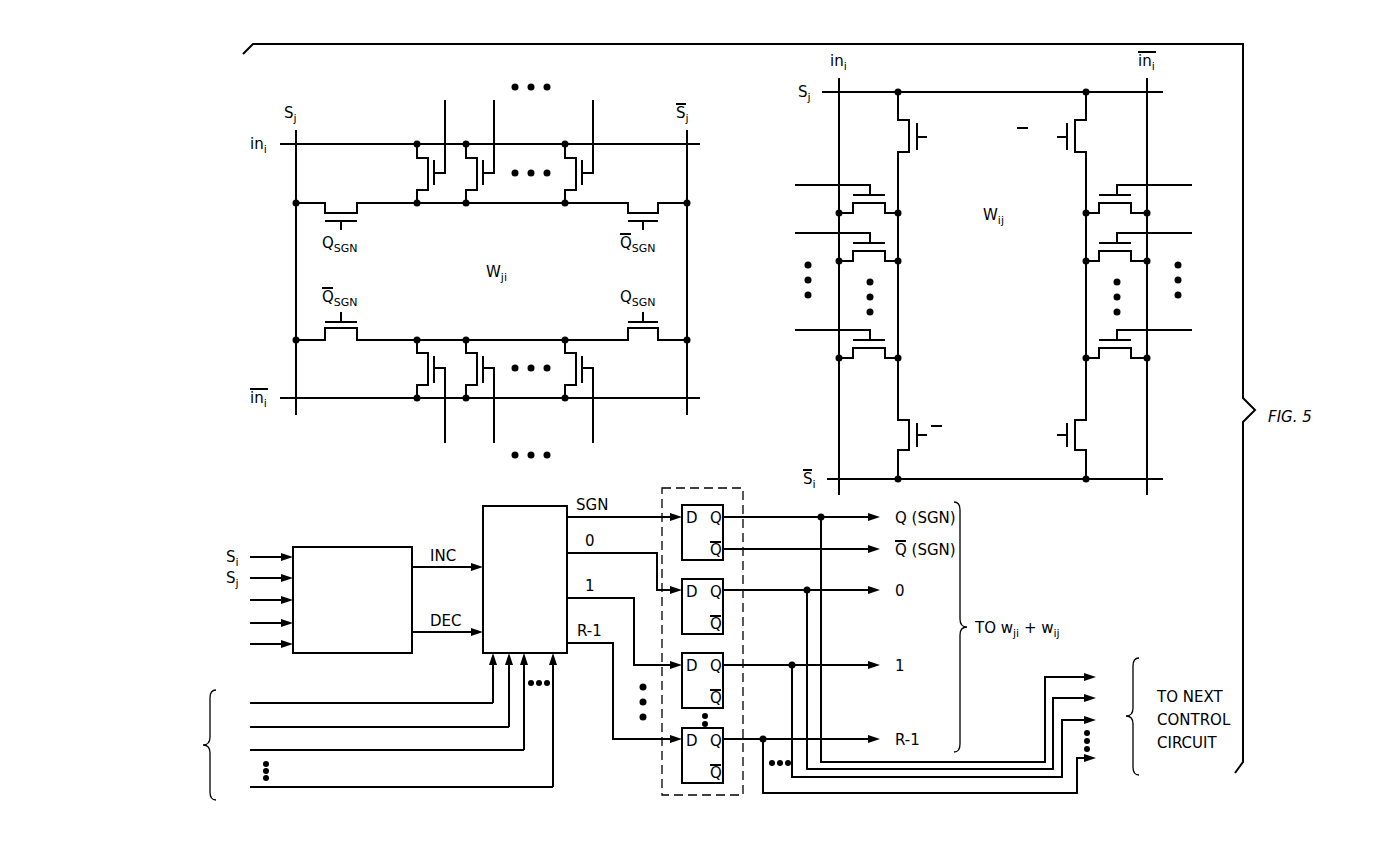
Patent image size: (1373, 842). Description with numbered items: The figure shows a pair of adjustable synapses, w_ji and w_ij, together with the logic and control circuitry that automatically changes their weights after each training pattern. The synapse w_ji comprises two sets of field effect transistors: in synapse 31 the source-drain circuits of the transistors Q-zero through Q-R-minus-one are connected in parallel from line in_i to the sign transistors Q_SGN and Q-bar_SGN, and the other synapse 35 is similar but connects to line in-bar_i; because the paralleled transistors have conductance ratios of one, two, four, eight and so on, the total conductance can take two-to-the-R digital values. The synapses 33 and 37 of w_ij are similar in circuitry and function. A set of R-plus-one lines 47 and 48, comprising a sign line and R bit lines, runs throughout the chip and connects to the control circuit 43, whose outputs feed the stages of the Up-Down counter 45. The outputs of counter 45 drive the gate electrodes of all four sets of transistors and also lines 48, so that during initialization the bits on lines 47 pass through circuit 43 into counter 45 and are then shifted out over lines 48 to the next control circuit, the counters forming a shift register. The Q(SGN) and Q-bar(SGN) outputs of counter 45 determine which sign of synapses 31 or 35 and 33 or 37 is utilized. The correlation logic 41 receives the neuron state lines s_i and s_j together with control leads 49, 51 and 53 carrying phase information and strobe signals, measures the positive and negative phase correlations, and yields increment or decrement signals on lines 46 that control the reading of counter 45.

The synapse 31 is at (445, 238).
The synapse 33 is at (930, 302).
The synapse 35 is at (542, 303).
The synapse 37 is at (1050, 304).
The correlation logic circuit 41 is at (342, 547).
The control circuit 43 is at (523, 506).
The Up-Down counter 45 is at (705, 488).
The lines 46 is at (450, 655).
The lines 47 is at (332, 680).
The lines 48 is at (995, 735).
The control lead 49 is at (259, 600).
The control lead 51 is at (259, 623).
The control lead 53 is at (259, 644).